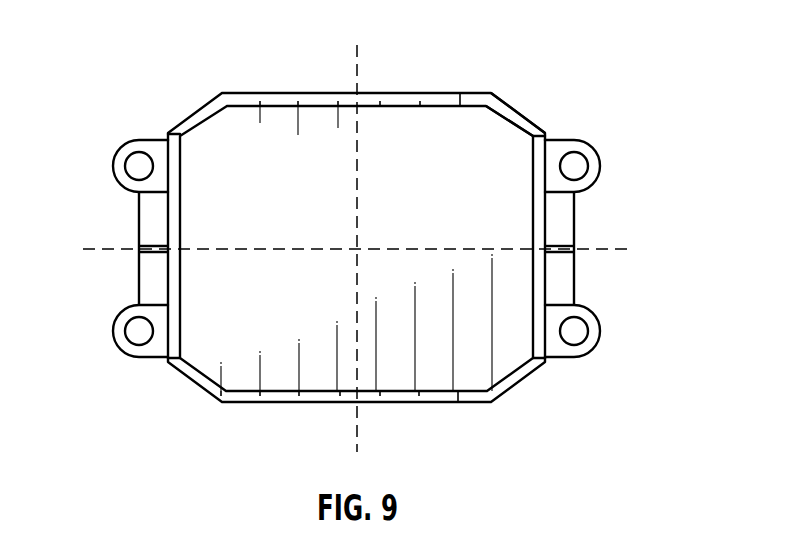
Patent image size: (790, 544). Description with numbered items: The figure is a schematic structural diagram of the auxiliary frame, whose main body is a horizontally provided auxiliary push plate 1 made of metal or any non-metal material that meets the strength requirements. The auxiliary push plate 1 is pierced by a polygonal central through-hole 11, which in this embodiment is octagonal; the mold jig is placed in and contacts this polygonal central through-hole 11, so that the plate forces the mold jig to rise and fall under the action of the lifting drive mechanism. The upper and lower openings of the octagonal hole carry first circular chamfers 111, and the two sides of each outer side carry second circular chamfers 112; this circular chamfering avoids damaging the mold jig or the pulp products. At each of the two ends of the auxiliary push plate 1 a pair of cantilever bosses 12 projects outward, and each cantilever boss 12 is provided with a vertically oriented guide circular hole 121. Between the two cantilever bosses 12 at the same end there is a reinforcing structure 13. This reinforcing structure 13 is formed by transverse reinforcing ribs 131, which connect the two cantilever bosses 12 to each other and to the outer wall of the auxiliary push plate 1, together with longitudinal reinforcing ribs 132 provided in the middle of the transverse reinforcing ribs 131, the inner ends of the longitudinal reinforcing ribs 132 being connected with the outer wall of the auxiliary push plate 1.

The auxiliary push plate 1 is at (437, 99).
The polygonal central through-hole 11 is at (255, 130).
The second circular chamfers 112 is at (503, 100).
The first circular chamfers 111 is at (521, 125).
The cantilever boss 12 is at (573, 192).
The guide circular hole 121 is at (573, 168).
The reinforcing structure 13 is at (138, 238).
The transverse reinforcing ribs 131 is at (567, 290).
The longitudinal reinforcing ribs 132 is at (600, 252).